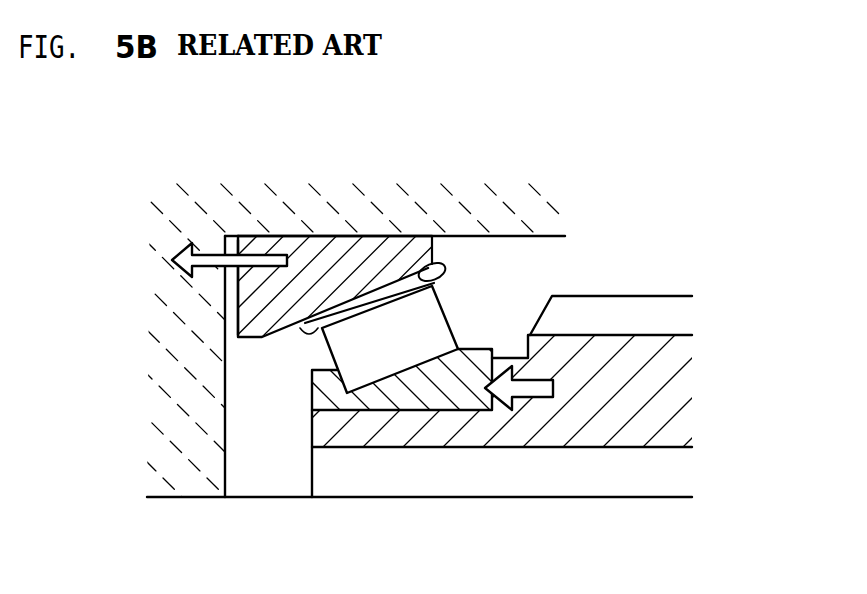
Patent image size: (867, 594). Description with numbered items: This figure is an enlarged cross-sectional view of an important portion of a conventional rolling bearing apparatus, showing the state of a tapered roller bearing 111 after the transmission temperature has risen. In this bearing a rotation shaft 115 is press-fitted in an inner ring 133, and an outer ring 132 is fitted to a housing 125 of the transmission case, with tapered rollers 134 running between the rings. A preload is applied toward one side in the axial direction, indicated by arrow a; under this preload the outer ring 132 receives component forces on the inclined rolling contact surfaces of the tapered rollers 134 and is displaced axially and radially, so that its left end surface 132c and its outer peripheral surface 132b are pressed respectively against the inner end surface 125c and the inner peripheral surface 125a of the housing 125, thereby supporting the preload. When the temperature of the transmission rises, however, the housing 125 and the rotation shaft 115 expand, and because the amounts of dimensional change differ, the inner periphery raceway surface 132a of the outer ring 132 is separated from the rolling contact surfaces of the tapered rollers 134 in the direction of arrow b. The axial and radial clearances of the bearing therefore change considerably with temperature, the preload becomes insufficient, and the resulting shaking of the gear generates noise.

The tapered roller bearing 111 is at (284, 355).
The rotation shaft 115 is at (663, 388).
The housing 125 is at (458, 208).
The inner peripheral surface 125a is at (531, 238).
The inner end surface 125c is at (260, 340).
The outer ring 132 is at (232, 300).
The inner periphery raceway surface 132a is at (446, 278).
The outer peripheral surface 132b is at (290, 236).
The left end surface 132c is at (237, 299).
The inner ring 133 is at (310, 388).
The tapered rollers 134 is at (435, 333).
The arrow a is at (530, 388).
The arrow b is at (240, 304).